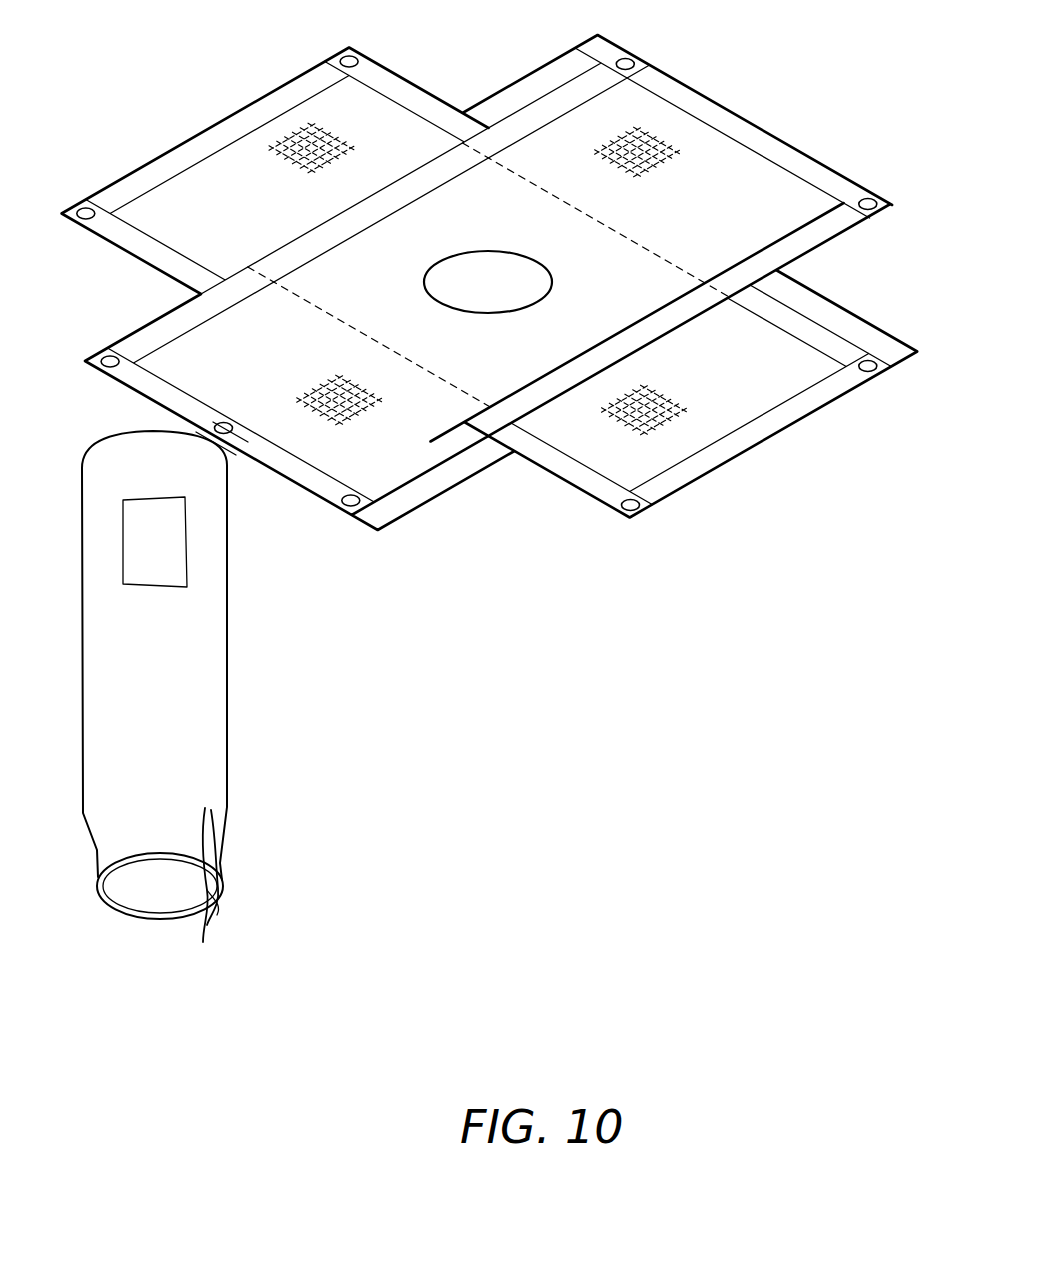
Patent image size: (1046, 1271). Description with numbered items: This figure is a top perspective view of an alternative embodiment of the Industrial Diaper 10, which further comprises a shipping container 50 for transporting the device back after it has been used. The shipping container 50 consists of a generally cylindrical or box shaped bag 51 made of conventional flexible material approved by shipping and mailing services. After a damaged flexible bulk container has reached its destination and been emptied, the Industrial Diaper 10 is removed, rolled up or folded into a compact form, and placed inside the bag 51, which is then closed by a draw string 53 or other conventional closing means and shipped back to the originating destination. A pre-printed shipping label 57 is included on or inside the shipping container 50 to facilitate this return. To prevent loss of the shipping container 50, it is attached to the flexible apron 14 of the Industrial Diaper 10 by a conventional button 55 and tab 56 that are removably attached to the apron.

The Industrial Diaper 10 is at (490, 358).
The flexible apron 14 is at (490, 299).
The shipping container 50 is at (223, 694).
The bag 51 is at (152, 741).
The draw string 53 is at (210, 917).
The button 55 is at (252, 493).
The tab 56 is at (208, 437).
The shipping label 57 is at (182, 570).